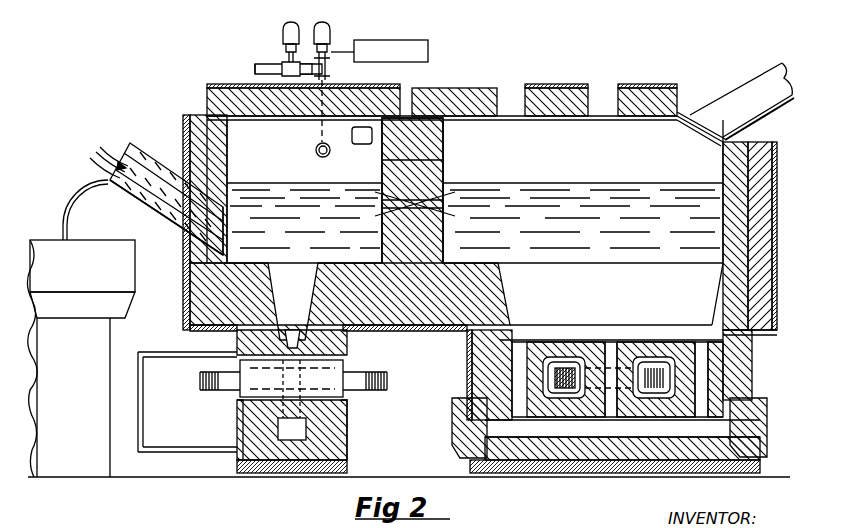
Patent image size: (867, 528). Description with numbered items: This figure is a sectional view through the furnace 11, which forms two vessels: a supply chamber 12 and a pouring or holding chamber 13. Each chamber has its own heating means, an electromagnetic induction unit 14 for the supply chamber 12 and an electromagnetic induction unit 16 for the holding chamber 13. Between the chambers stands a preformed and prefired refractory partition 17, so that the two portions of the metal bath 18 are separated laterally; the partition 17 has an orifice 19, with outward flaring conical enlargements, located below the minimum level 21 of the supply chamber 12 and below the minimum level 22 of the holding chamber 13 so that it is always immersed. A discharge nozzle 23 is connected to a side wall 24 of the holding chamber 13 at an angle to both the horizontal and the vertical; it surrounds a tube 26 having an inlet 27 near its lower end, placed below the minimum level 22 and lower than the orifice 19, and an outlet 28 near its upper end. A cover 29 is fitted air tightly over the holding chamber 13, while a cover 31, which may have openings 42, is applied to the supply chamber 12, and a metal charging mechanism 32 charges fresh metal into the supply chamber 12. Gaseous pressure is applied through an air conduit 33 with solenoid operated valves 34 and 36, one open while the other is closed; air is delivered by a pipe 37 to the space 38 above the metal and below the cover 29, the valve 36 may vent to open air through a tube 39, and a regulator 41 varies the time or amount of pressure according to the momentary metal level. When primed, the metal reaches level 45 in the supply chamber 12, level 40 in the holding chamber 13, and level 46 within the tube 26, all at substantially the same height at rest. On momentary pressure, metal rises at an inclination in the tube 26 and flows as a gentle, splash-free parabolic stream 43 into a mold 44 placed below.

The furnace 11 is at (760, 338).
The supply chamber 12 is at (640, 145).
The holding chamber 13 is at (252, 128).
The electromagnetic induction unit 14 is at (564, 398).
The electromagnetic induction unit 16 is at (372, 392).
The refractory partition 17 is at (440, 160).
The metal bath 18 is at (598, 178).
The orifice 19 is at (446, 208).
The minimum level 21 is at (648, 188).
The minimum level 22 is at (345, 192).
The discharge nozzle 23 is at (143, 146).
The side wall 24 is at (220, 133).
The tube 26 is at (168, 200).
The inlet 27 is at (226, 221).
The outlet 28 is at (108, 166).
The cover 29 is at (210, 95).
The cover 31 is at (558, 95).
The metal charging mechanism 32 is at (755, 82).
The air conduit 33 is at (280, 39).
The solenoid operated valve 34 is at (299, 22).
The solenoid operated valve 36 is at (326, 26).
The pipe 37 is at (318, 132).
The space 38 is at (340, 152).
The tube 39 is at (260, 64).
The metal level 40 is at (292, 178).
The regulator 41 is at (418, 40).
The openings 42 is at (508, 98).
The stream 43 is at (68, 218).
The mold 44 is at (135, 288).
The metal level 45 is at (572, 178).
The level 46 is at (122, 165).